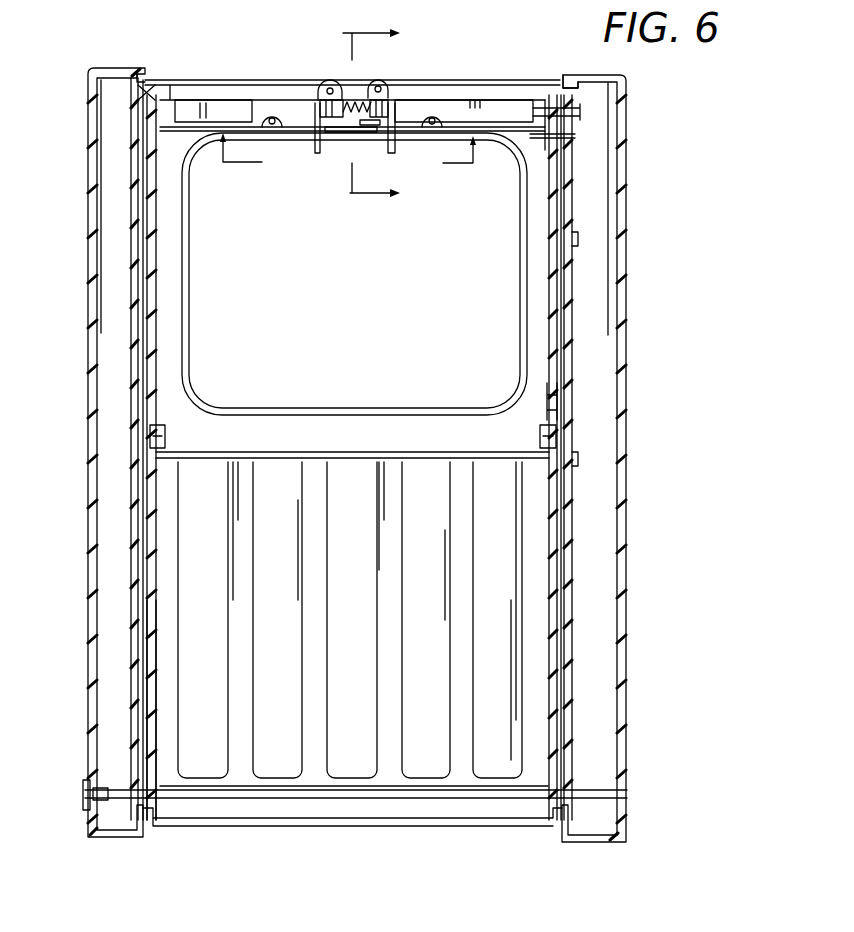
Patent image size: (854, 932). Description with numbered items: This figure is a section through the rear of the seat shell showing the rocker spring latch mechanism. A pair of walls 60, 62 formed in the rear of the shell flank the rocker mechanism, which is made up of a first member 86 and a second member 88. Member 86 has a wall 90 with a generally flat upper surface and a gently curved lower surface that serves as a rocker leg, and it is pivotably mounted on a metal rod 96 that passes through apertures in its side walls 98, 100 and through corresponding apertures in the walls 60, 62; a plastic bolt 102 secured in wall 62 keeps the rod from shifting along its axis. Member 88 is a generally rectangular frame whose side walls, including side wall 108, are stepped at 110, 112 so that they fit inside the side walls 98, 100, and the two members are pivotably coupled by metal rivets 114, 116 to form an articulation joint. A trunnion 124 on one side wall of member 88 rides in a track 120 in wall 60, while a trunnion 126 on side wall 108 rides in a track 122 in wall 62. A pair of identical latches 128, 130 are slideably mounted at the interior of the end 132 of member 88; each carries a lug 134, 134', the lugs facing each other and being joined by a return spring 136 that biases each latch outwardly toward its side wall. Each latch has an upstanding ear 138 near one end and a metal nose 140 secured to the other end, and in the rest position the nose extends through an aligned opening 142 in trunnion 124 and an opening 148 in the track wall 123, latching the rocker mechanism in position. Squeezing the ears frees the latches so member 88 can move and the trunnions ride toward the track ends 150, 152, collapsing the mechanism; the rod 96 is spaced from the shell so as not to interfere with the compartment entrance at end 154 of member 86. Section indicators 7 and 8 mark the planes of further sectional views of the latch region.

The wall 60 is at (627, 303).
The wall 62 is at (88, 326).
The first member 86 is at (535, 653).
The second member 88 is at (315, 406).
The wall 90 is at (368, 600).
The metal rod 96 is at (240, 800).
The side wall 98 is at (558, 740).
The side wall 100 is at (150, 718).
The plastic bolt 102 is at (83, 794).
The side wall 108 is at (155, 322).
The step 110 is at (541, 383).
The step 112 is at (160, 378).
The metal rivet 114 is at (545, 443).
The metal rivet 116 is at (162, 437).
The track 120 is at (568, 348).
The track 122 is at (145, 367).
The track wall 123 is at (575, 197).
The trunnion 124 is at (558, 135).
The trunnion 126 is at (137, 77).
The latch 128 is at (437, 107).
The latch 130 is at (252, 105).
The end 132 is at (502, 74).
The lug 134 is at (394, 72).
The lug 134' is at (330, 144).
The return spring 136 is at (338, 85).
The upstanding ear 138 is at (385, 152).
The metal nose 140 is at (540, 135).
The opening 142 is at (578, 127).
The opening 148 is at (577, 240).
The track end 150 is at (562, 78).
The track end 152 is at (148, 82).
The end 154 is at (318, 835).
The section line 7 is at (350, 165).
The section line 8 is at (379, 117).